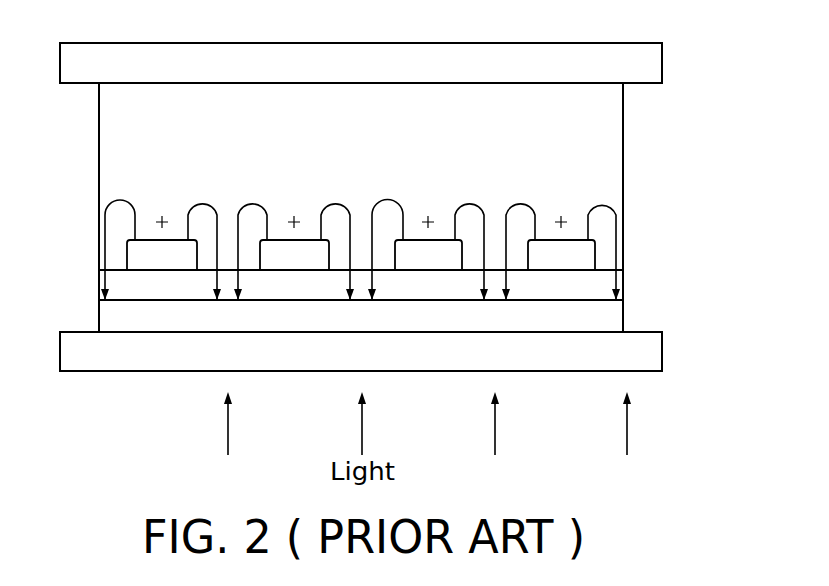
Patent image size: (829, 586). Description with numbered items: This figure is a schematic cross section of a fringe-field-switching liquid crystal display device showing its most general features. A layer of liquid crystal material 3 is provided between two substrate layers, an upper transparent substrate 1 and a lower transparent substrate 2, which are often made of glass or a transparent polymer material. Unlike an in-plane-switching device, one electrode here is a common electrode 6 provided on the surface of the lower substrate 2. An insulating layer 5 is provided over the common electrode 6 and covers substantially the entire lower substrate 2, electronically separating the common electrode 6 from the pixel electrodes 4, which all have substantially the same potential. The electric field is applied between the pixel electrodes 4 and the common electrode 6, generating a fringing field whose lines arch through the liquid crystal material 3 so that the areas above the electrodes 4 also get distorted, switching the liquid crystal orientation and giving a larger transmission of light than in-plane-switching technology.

The upper transparent substrate 1 is at (650, 67).
The lower transparent substrate 2 is at (650, 352).
The liquid crystal material 3 is at (612, 146).
The pixel electrodes 4 is at (597, 233).
The insulating layer 5 is at (557, 293).
The common electrode 6 is at (614, 318).